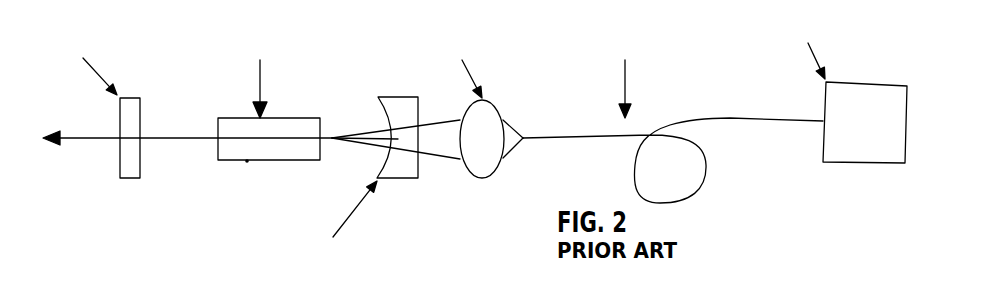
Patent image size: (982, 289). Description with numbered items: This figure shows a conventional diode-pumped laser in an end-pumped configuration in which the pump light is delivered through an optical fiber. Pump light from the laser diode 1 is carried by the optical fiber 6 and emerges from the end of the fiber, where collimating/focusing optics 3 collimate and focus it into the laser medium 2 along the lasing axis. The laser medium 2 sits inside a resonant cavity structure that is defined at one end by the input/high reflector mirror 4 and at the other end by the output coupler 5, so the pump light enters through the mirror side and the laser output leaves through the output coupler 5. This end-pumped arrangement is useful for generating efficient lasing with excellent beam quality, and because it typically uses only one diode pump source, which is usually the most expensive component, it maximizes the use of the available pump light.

The laser diode 1 is at (872, 163).
The laser medium 2 is at (280, 118).
The collimating/focusing optics 3 is at (472, 180).
The input/high reflector mirror 4 is at (400, 180).
The output coupler 5 is at (132, 178).
The optical fiber 6 is at (710, 184).